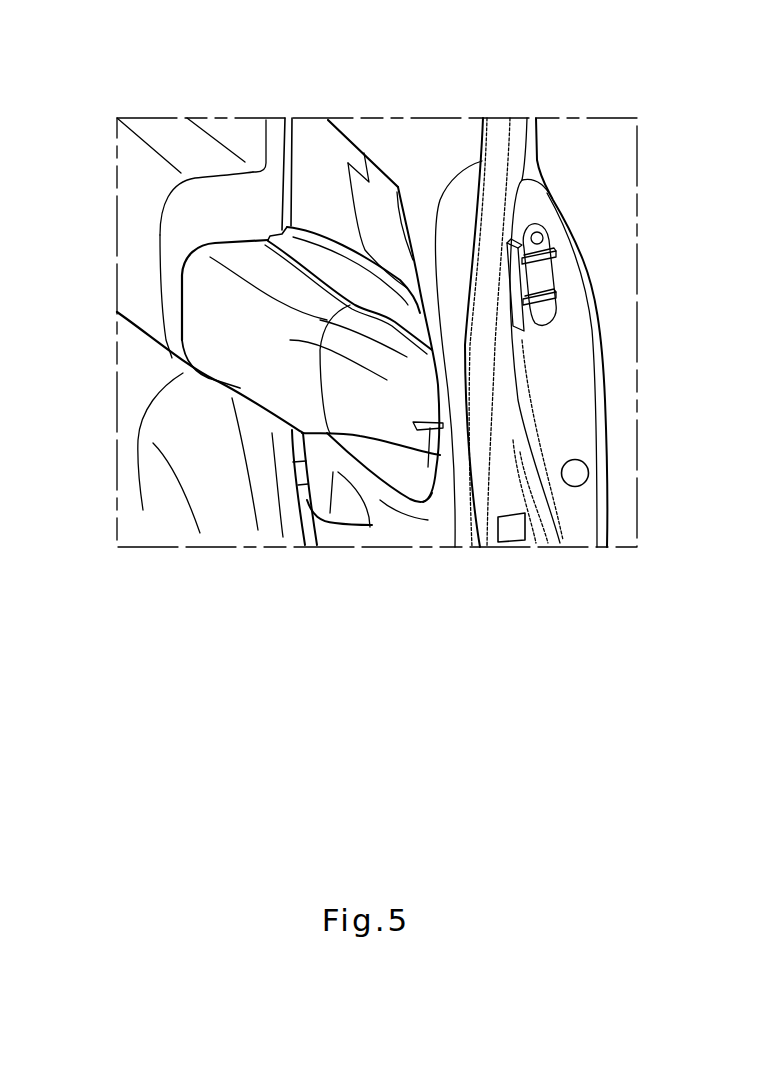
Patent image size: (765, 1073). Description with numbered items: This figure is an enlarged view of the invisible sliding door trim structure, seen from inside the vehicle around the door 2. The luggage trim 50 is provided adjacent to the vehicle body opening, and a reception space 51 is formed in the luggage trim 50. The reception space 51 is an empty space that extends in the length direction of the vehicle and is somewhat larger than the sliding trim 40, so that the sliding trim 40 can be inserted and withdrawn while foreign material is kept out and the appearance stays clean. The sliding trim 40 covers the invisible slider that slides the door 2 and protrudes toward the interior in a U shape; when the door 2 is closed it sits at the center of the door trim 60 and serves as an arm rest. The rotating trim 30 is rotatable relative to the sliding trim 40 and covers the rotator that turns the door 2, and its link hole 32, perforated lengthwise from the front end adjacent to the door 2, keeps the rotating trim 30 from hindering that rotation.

The door 2 is at (560, 243).
The rotating trim 30 is at (390, 417).
The link hole 32 is at (428, 467).
The sliding trim 40 is at (290, 400).
The luggage trim 50 is at (182, 210).
The reception space 51 is at (190, 254).
The door trim 60 is at (420, 153).